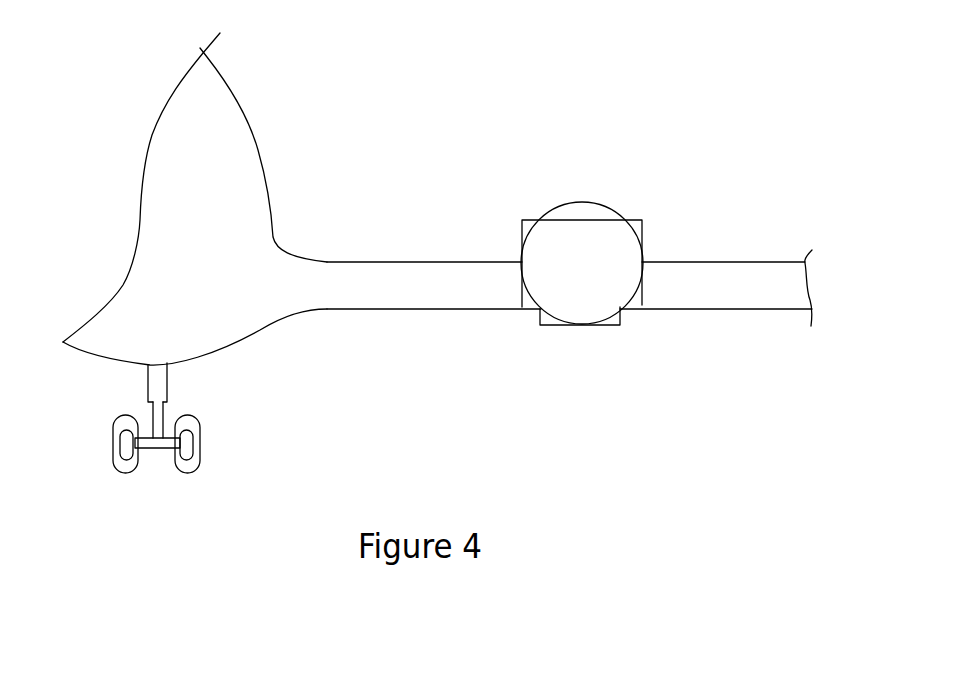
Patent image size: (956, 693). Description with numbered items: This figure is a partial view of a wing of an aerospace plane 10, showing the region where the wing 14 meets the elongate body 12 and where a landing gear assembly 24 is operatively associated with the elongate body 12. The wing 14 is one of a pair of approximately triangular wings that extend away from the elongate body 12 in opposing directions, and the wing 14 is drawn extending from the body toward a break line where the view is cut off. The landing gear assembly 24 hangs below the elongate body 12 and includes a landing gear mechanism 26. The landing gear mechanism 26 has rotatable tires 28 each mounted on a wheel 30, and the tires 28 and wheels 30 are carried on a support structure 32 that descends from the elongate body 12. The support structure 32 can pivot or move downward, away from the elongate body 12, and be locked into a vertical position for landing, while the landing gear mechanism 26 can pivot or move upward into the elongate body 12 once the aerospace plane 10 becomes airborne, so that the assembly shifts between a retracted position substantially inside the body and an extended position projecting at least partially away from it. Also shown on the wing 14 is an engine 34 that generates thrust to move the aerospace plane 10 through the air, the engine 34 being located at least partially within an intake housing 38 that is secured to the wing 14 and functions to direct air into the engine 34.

The aerospace plane 10 is at (712, 82).
The elongate body 12 is at (228, 278).
The wing 14 is at (713, 293).
The landing gear assembly 24 is at (130, 398).
The landing gear mechanism 26 is at (167, 412).
The rotatable tire 28 is at (117, 463).
The wheel 30 is at (115, 437).
The support structure 32 is at (167, 383).
The engine 34 is at (588, 250).
The intake housing 38 is at (538, 318).